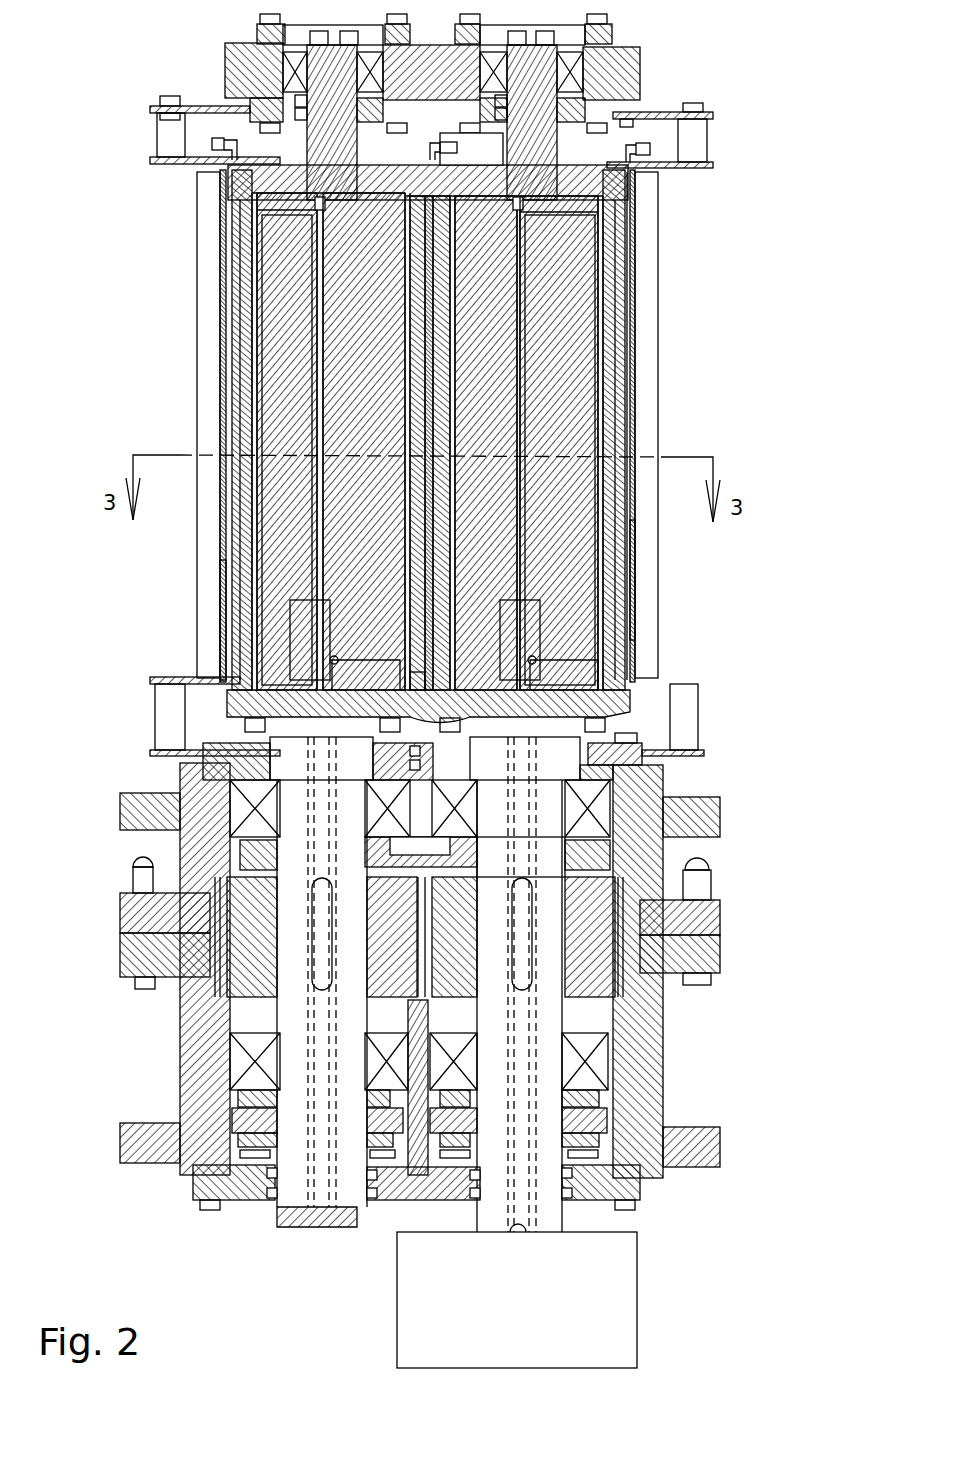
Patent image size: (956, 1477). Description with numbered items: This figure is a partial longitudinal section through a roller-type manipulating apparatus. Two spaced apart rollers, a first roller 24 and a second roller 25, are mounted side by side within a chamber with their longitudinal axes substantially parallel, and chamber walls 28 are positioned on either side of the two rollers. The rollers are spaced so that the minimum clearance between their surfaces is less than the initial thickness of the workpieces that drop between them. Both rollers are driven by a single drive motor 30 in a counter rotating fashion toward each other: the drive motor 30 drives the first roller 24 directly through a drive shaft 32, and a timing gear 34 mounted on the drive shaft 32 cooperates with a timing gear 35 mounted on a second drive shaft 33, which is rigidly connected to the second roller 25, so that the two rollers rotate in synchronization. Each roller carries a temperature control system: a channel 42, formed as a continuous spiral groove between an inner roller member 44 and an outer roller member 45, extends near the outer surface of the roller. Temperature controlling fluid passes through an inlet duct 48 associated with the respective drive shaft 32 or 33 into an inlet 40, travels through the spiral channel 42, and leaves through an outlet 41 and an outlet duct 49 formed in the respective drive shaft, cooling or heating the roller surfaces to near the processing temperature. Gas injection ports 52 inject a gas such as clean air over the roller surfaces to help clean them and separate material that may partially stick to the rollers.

The first roller 24 is at (570, 295).
The second roller 25 is at (285, 290).
The chamber walls 28 is at (222, 330).
The drive motor 30 is at (532, 1356).
The drive shaft 32 is at (550, 850).
The drive shaft 33 is at (290, 795).
The timing gear 34 is at (595, 975).
The timing gear 35 is at (245, 968).
The inlet 40 is at (300, 640).
The outlet 41 is at (330, 678).
The channel 42 is at (222, 598).
The inner roller member 44 is at (290, 388).
The outer roller member 45 is at (240, 433).
The inlet duct 48 is at (330, 858).
The outlet duct 49 is at (305, 820).
The gas injection ports 52 is at (217, 145).